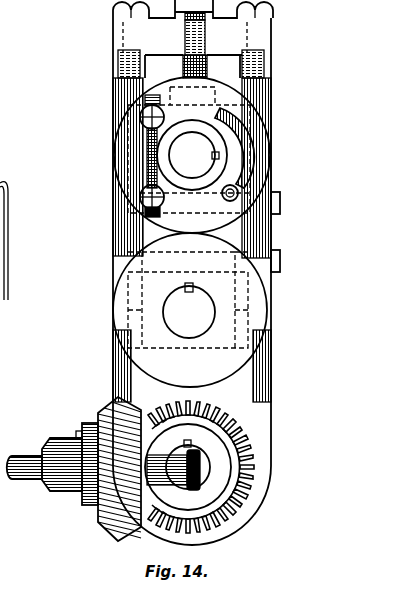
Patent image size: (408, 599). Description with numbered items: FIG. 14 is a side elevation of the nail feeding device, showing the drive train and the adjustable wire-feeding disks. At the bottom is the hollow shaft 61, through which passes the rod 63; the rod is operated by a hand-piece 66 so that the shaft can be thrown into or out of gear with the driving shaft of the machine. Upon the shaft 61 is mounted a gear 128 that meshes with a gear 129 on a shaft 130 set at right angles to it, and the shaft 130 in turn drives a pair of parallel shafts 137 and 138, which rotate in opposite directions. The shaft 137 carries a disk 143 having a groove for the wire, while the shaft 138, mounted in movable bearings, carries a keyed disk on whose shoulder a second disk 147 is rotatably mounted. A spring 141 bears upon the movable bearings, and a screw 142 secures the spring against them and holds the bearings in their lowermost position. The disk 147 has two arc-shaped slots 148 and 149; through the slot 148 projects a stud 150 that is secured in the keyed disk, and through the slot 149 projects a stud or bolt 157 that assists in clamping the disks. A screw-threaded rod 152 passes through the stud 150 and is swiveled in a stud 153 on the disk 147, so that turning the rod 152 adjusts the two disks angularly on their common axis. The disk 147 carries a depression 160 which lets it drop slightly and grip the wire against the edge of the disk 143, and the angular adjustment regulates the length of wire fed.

The shaft 61 is at (72, 476).
The rod 63 is at (30, 470).
The hand-piece 66 is at (204, 452).
The gear 128 is at (124, 520).
The gear 129 is at (254, 497).
The shaft 130 is at (206, 470).
The shaft 137 is at (205, 303).
The shaft 138 is at (193, 147).
The spring 141 is at (211, 67).
The screw 142 is at (205, 14).
The disk 143 is at (240, 362).
The second disk 147 is at (217, 222).
The arc-shaped slot 148 is at (147, 172).
The arc-shaped slot 149 is at (252, 150).
The stud 150 is at (146, 204).
The screw-threaded rod 152 is at (152, 147).
The stud 153 is at (138, 108).
The stud or bolt 157 is at (241, 191).
The depression 160 is at (114, 147).